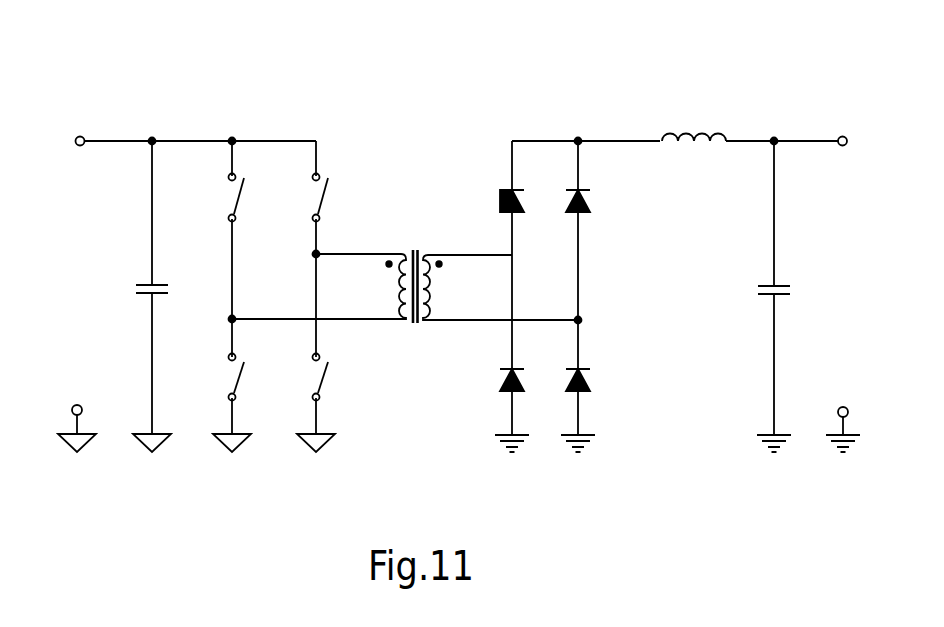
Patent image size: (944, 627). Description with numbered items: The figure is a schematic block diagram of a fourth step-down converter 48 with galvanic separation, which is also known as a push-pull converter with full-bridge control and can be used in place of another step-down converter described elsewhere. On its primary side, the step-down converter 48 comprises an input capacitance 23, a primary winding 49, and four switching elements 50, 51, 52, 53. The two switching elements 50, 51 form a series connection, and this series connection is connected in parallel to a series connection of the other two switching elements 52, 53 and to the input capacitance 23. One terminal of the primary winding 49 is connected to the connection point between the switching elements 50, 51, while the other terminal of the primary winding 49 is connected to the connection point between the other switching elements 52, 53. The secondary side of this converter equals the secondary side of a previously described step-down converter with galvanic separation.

The input capacitance 23 is at (160, 282).
The step-down converter 48 is at (310, 477).
The primary winding 49 is at (403, 321).
The switching element 50 is at (240, 195).
The switching element 51 is at (240, 377).
The switching element 52 is at (324, 195).
The switching element 53 is at (324, 377).